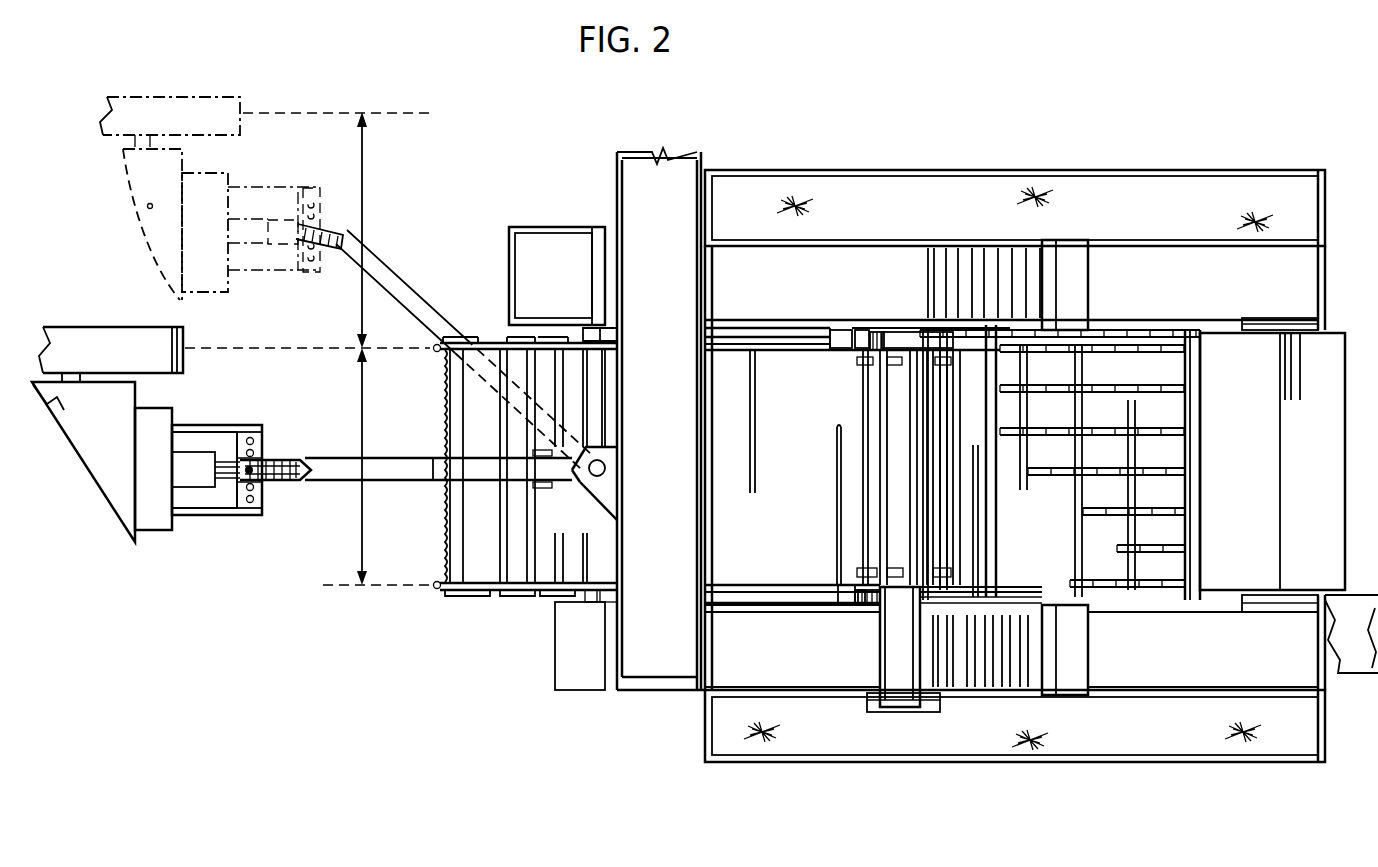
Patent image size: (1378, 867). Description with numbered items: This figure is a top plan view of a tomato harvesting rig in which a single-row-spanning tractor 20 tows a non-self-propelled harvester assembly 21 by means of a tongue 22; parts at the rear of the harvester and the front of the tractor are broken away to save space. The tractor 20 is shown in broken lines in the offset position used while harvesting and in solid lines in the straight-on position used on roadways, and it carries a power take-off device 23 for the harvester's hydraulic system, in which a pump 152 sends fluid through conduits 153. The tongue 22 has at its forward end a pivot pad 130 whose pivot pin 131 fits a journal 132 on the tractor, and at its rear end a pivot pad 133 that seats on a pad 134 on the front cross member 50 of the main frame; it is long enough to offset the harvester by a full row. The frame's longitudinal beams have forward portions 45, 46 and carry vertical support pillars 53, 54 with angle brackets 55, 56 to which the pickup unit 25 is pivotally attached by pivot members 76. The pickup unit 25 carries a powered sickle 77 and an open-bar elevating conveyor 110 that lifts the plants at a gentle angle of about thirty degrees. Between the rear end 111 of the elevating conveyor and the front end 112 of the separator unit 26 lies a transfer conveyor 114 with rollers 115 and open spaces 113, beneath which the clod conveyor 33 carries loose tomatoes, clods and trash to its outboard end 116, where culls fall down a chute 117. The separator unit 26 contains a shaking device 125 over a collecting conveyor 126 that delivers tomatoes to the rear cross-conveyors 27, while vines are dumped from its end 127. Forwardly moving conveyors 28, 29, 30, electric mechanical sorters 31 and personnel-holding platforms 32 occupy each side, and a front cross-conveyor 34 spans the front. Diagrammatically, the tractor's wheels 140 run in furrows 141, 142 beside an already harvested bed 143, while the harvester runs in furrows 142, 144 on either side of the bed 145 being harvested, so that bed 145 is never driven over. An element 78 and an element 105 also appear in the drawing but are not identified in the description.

The tractor 20 is at (146, 206).
The harvester assembly 21 is at (1155, 153).
The tongue 22 is at (412, 287).
The power take-off device 23 is at (216, 265).
The pickup unit 25 is at (500, 601).
The separator unit 26 is at (1110, 333).
The rear cross-conveyors 27 is at (1286, 318).
The forwardly moving conveyor 28 is at (1199, 298).
The forwardly moving conveyor 29 is at (978, 255).
The forwardly moving conveyor 30 is at (795, 287).
The electric mechanical sorters 31 is at (1078, 288).
The personnel-holding platforms 32 is at (1214, 208).
The clod conveyor 33 is at (905, 528).
The front cross-conveyor 34 is at (681, 565).
The forward portion of longitudinal beam 45 is at (732, 598).
The forward portion of longitudinal beam 46 is at (803, 340).
The front cross member 50 is at (605, 526).
The vertical support pillar 53 is at (843, 596).
The vertical support pillar 54 is at (842, 332).
The angle bracket 55 is at (860, 600).
The angle bracket 56 is at (859, 333).
The pivot members 76 is at (870, 334).
The powered sickle 77 is at (446, 549).
The rail extension 78 is at (865, 387).
The housing box 105 is at (565, 291).
The elevating conveyor 110 is at (497, 502).
The rear end of elevating conveyor 111 is at (928, 528).
The front end of separator unit 112 is at (958, 582).
The open spaces 113 is at (888, 378).
The transfer conveyor 114 is at (903, 402).
The rollers 115 is at (942, 410).
The outboard end of clod conveyor 116 is at (898, 700).
The chute 117 is at (938, 707).
The shaking device 125 is at (1128, 410).
The collecting conveyor 126 is at (1150, 472).
The end of separator unit 127 is at (1334, 501).
The pivot pad 130 is at (315, 215).
The pivot pin 131 is at (268, 463).
The journal 132 is at (254, 456).
The pivot pad 133 is at (607, 463).
The pad 134 is at (609, 498).
The tractor wheels 140 is at (237, 106).
The furrow 141 is at (392, 112).
The furrow 142 is at (380, 354).
The bed 143 is at (458, 176).
The furrow 144 is at (375, 588).
The bed 145 is at (355, 550).
The pump 152 is at (258, 240).
The conduits 153 is at (292, 280).